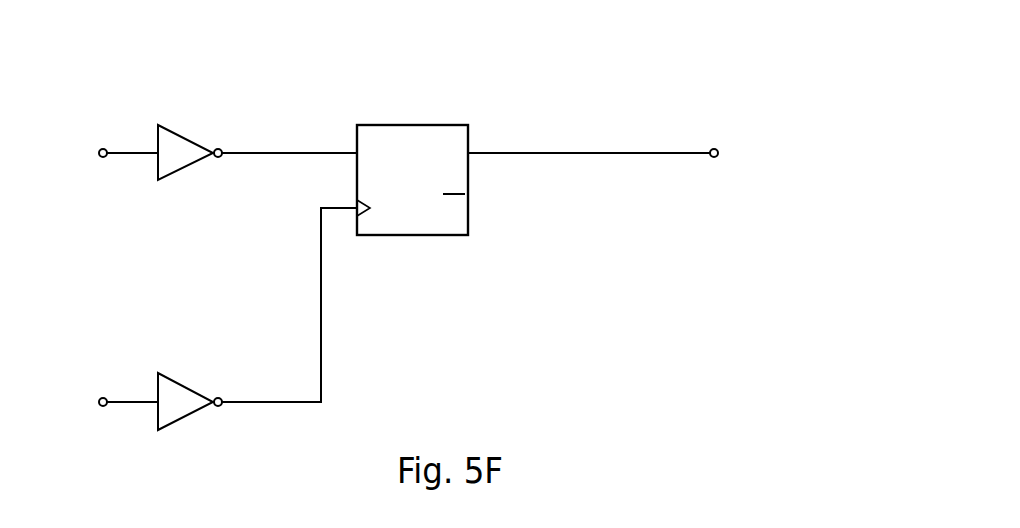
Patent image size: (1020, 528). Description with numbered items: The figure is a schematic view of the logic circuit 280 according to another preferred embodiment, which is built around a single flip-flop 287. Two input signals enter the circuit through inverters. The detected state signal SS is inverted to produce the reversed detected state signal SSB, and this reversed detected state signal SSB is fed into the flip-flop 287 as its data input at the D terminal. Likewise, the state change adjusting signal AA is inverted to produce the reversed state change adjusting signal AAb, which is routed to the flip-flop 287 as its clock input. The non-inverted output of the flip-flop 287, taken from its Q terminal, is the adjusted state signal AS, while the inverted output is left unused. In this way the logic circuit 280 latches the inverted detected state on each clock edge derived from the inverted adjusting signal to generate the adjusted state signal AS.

The logic circuit 280 is at (592, 74).
The flip-flop 287 is at (438, 125).
The detected state signal SS is at (112, 153).
The reversed detected state signal SSB is at (289, 135).
The state change adjusting signal AA is at (106, 403).
The reversed state change adjusting signal AAb is at (289, 305).
The adjusted state signal AS is at (615, 150).